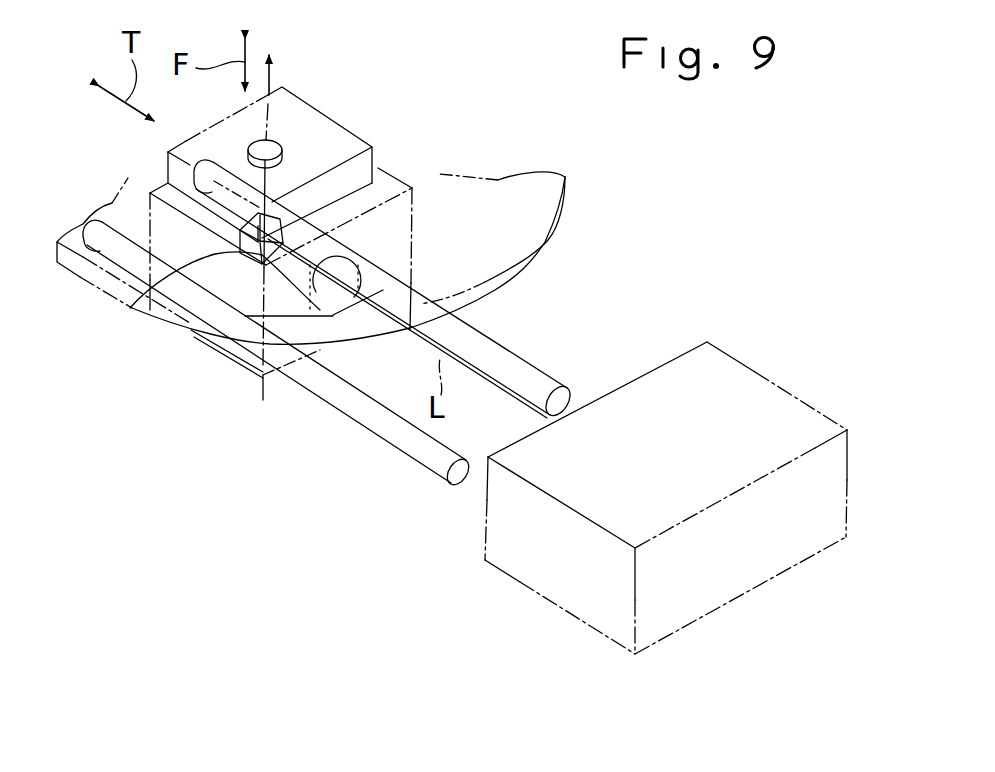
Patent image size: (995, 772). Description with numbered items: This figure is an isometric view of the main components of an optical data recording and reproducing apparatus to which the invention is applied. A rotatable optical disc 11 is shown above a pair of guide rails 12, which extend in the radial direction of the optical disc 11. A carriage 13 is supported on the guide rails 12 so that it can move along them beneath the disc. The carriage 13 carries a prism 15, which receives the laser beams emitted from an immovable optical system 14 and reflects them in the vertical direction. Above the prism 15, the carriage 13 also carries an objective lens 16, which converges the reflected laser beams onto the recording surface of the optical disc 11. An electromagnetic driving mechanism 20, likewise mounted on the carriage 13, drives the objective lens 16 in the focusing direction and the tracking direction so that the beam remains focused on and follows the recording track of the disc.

The optical disc 11 is at (549, 239).
The guide rails 12 is at (535, 351).
The carriage 13 is at (125, 318).
The immovable optical system 14 is at (700, 343).
The prism 15 is at (263, 263).
The objective lens 16 is at (283, 152).
The electromagnetic driving mechanism 20 is at (368, 167).